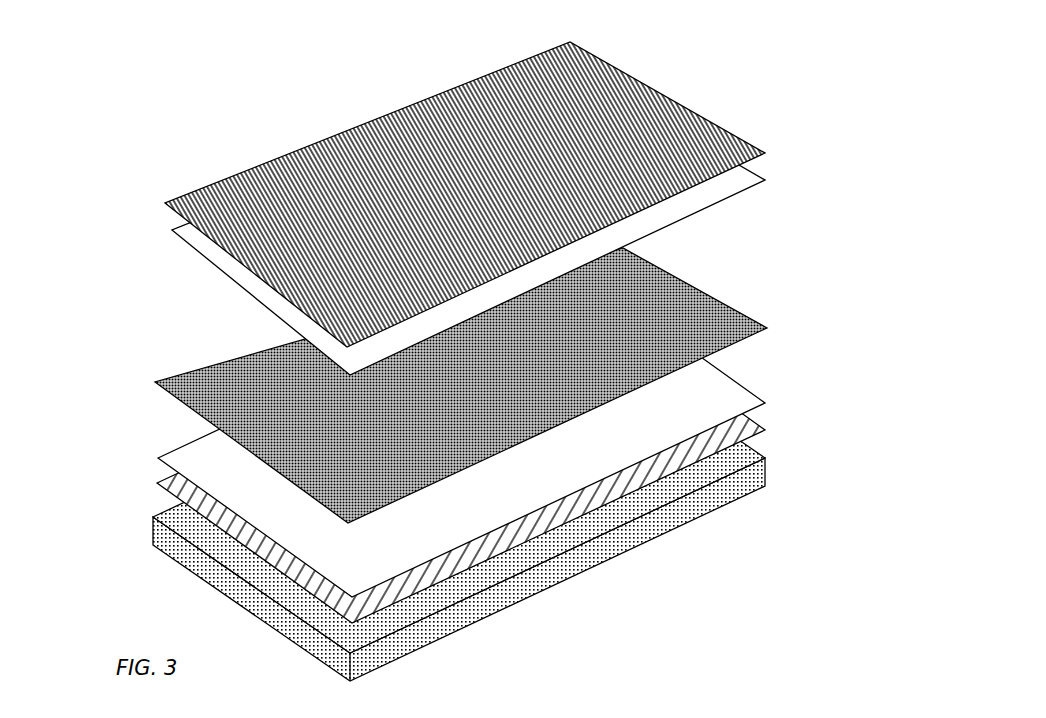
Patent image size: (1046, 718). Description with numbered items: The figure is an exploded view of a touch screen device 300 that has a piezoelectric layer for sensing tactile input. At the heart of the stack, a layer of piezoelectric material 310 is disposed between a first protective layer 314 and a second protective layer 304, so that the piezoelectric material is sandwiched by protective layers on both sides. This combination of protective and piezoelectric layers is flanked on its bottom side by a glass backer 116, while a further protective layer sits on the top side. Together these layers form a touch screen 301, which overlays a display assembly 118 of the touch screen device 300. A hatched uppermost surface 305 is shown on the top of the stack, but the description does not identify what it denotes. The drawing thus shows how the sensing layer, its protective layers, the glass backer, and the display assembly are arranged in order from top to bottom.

The touch screen device 300 is at (456, 354).
The touch screen 301 is at (456, 332).
The second protective layer 304 is at (173, 241).
The electrode layer 305 is at (163, 204).
The layer of piezoelectric material 310 is at (153, 382).
The first protective layer 314 is at (156, 457).
The glass backer 116 is at (154, 482).
The display assembly 118 is at (150, 533).